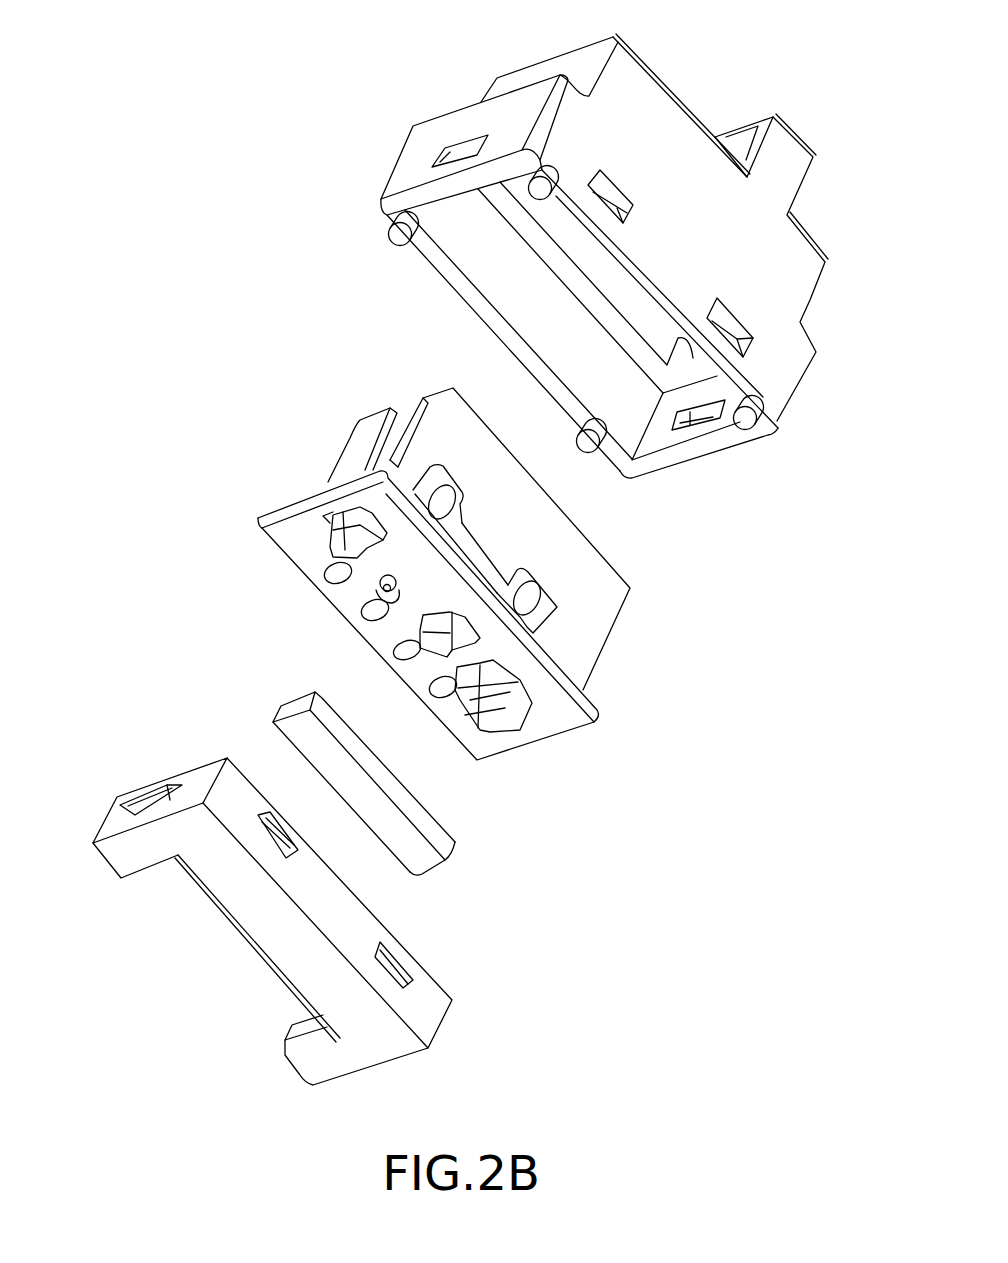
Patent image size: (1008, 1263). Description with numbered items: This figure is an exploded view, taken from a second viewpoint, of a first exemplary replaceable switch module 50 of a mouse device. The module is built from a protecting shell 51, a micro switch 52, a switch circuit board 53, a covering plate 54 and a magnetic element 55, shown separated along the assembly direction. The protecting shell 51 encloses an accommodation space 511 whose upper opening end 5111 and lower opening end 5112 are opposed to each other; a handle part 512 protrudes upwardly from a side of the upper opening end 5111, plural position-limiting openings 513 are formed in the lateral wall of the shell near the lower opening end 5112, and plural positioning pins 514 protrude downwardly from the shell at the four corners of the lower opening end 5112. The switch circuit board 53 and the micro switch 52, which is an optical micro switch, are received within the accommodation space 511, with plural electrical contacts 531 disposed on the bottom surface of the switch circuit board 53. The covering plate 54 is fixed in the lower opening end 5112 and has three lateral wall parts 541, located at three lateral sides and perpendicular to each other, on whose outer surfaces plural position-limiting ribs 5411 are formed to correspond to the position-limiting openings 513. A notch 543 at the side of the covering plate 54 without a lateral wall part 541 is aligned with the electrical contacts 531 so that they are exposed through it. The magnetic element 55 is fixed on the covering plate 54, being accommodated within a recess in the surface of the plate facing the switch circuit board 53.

The replaceable switch module 50 is at (199, 53).
The protecting shell 51 is at (477, 103).
The accommodation space 511 is at (607, 278).
The upper opening end 5111 is at (682, 97).
The lower opening end 5112 is at (467, 280).
The handle part 512 is at (790, 153).
The position-limiting openings 513 is at (460, 153).
The positioning pins 514 is at (395, 237).
The micro switch 52 is at (585, 572).
The switch circuit board 53 is at (533, 730).
The electrical contacts 531 is at (305, 583).
The covering plate 54 is at (203, 767).
The lateral wall parts 541 is at (432, 1013).
The position-limiting ribs 5411 is at (141, 793).
The notch 543 is at (225, 952).
The magnetic element 55 is at (293, 707).